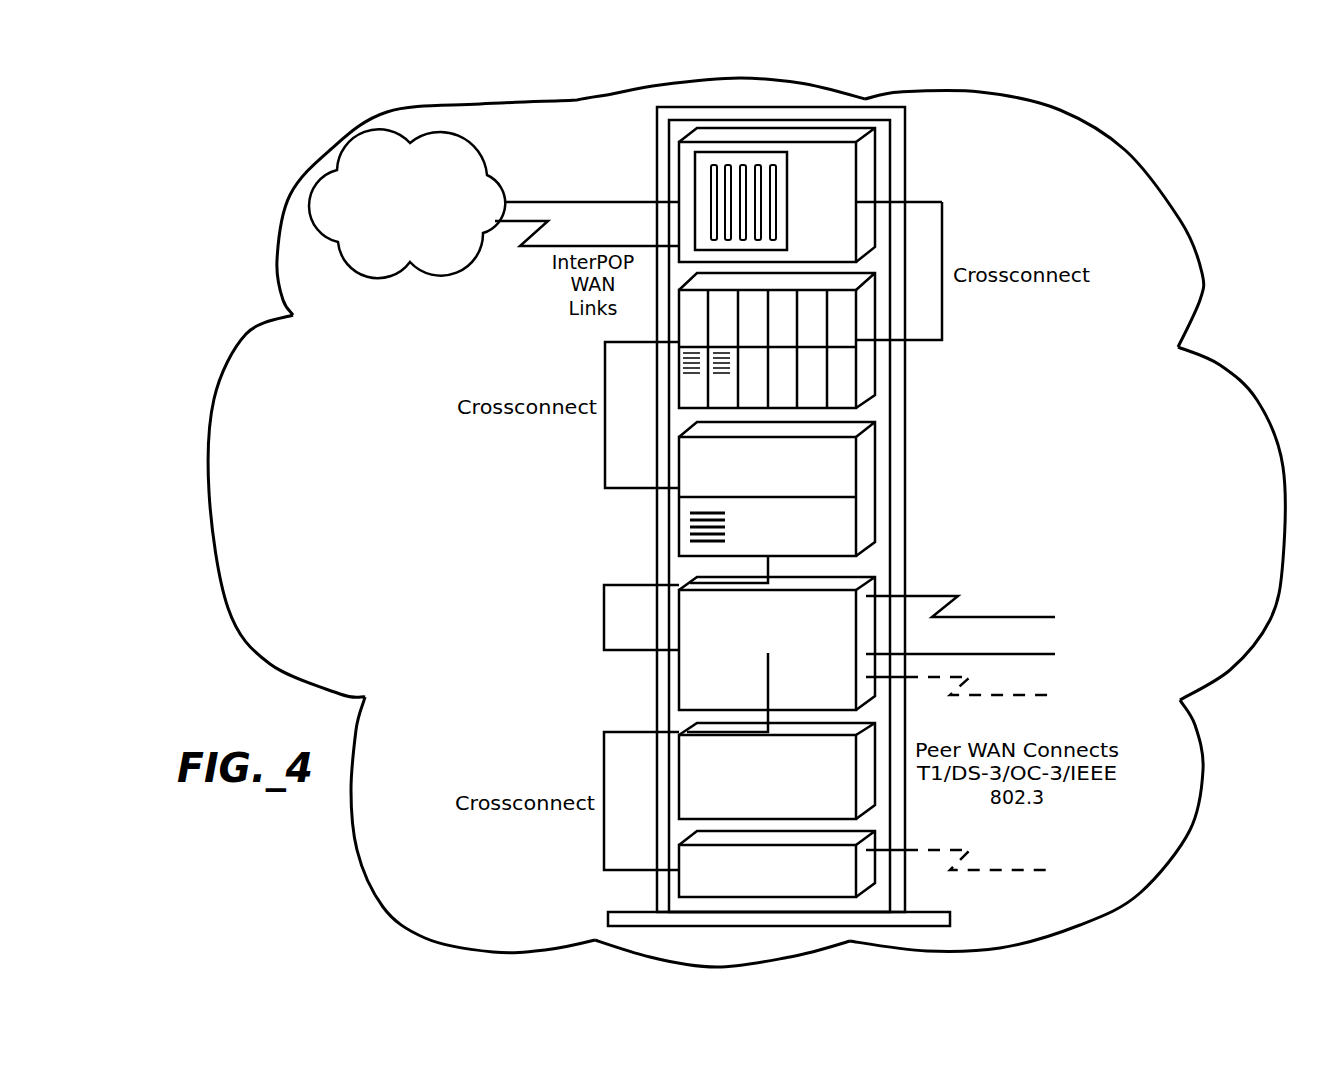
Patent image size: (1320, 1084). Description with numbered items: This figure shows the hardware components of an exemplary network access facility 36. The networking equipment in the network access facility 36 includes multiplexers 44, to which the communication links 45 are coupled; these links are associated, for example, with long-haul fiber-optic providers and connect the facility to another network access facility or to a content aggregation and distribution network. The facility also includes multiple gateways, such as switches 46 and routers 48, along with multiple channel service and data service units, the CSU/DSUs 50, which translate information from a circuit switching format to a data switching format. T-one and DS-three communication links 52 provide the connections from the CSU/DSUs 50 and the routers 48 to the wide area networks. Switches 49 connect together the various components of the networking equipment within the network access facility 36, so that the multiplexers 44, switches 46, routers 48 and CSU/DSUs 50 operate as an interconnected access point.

The network access facility 36 is at (1057, 137).
The multiplexers 44 is at (977, 370).
The communication links 45 is at (567, 246).
The switches 46 is at (777, 489).
The routers 48 is at (777, 643).
The switches 49 is at (604, 732).
The channel service and data service units (CSU/DSUs) 50 is at (777, 864).
The T1/DS-3 communication links 52 is at (1025, 695).